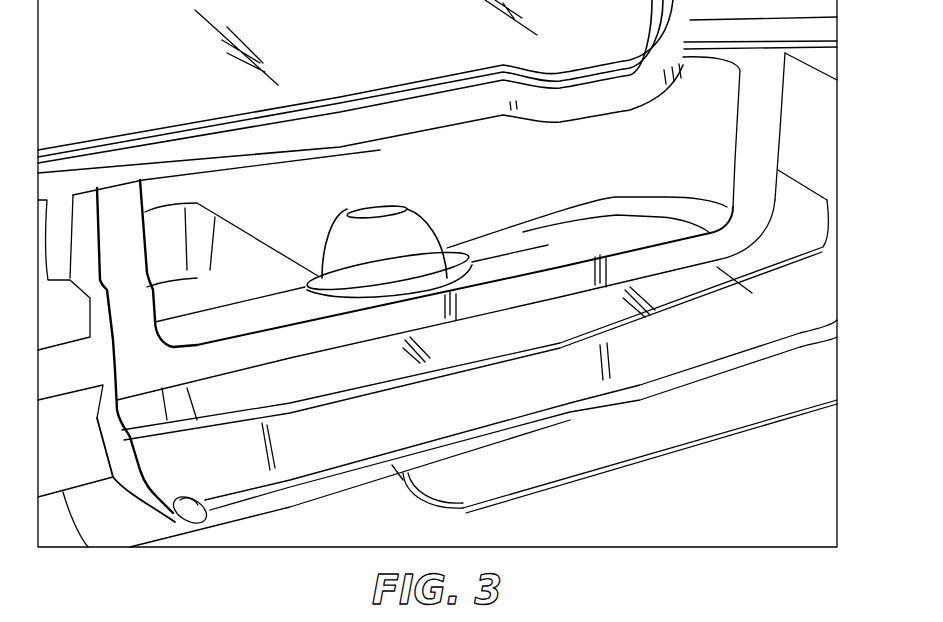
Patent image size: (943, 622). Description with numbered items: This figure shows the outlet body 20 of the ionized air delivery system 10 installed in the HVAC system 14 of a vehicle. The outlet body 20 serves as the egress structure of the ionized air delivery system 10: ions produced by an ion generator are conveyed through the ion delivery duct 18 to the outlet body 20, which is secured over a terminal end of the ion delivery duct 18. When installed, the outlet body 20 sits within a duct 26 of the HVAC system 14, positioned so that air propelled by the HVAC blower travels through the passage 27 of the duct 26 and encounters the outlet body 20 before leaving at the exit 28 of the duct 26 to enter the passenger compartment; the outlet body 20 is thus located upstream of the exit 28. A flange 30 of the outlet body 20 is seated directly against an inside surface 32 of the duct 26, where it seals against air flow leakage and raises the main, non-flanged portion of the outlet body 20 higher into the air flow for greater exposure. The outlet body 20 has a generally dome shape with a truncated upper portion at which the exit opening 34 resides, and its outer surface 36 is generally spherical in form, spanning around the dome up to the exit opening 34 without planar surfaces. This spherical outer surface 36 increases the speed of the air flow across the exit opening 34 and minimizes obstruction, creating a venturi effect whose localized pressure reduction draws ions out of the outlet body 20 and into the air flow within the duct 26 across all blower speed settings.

The ionized air delivery system 10 is at (736, 446).
The HVAC system 14 is at (770, 143).
The ion delivery duct 18 is at (648, 438).
The outlet body 20 is at (403, 217).
The duct 26 is at (190, 335).
The passage 27 is at (685, 125).
The exit 28 is at (347, 468).
The flange 30 is at (467, 258).
The inside surface 32 is at (276, 318).
The exit opening 34 is at (370, 212).
The outer surface 36 is at (355, 242).